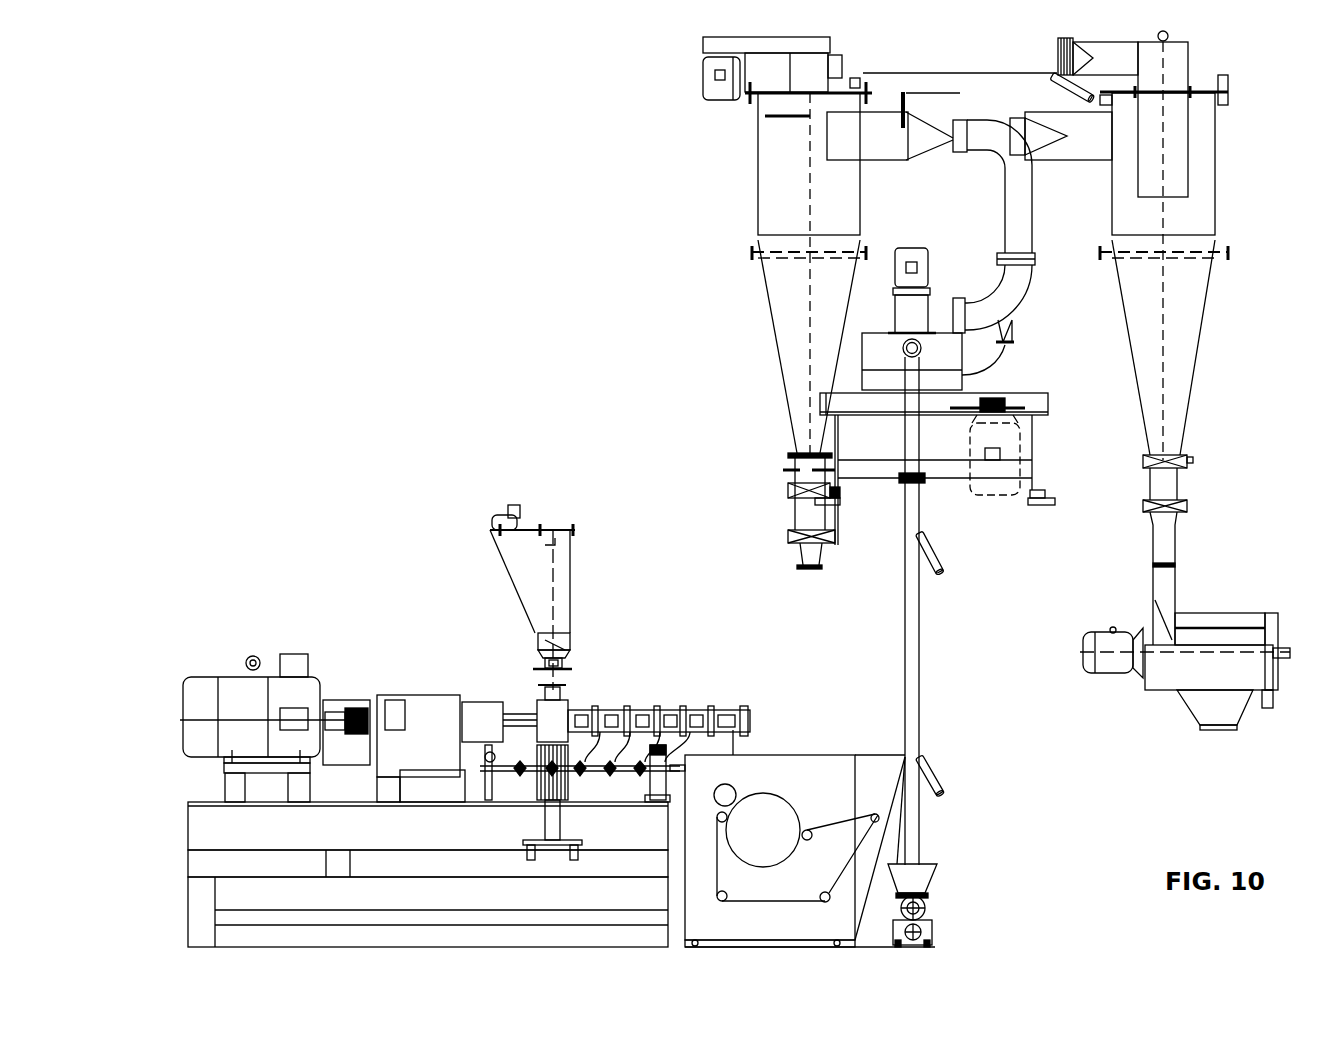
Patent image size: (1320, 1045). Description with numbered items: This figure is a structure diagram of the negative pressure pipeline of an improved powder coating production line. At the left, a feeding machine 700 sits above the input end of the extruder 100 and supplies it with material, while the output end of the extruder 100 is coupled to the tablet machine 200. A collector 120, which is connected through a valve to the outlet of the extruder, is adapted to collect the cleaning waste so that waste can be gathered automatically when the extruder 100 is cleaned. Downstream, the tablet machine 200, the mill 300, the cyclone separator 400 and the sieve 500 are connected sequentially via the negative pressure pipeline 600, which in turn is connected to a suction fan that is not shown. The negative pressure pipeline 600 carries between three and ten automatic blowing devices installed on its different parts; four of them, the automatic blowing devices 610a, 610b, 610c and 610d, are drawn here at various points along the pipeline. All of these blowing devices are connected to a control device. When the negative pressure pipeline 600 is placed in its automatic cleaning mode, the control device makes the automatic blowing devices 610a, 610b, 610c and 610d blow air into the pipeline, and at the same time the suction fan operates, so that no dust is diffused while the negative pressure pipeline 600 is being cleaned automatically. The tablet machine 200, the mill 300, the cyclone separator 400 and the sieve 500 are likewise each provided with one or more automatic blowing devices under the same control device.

The extruder 100 is at (620, 698).
The collector 120 is at (910, 858).
The tablet machine 200 is at (787, 783).
The mill 300 is at (1012, 408).
The cyclone separator 400 is at (782, 212).
The sieve 500 is at (1255, 645).
The negative pressure pipeline 600 is at (920, 640).
The automatic blowing device 610a is at (935, 945).
The automatic blowing device 610b is at (945, 790).
The automatic blowing device 610c is at (945, 552).
The automatic blowing device 610d is at (1060, 75).
The feeding machine 700 is at (565, 635).